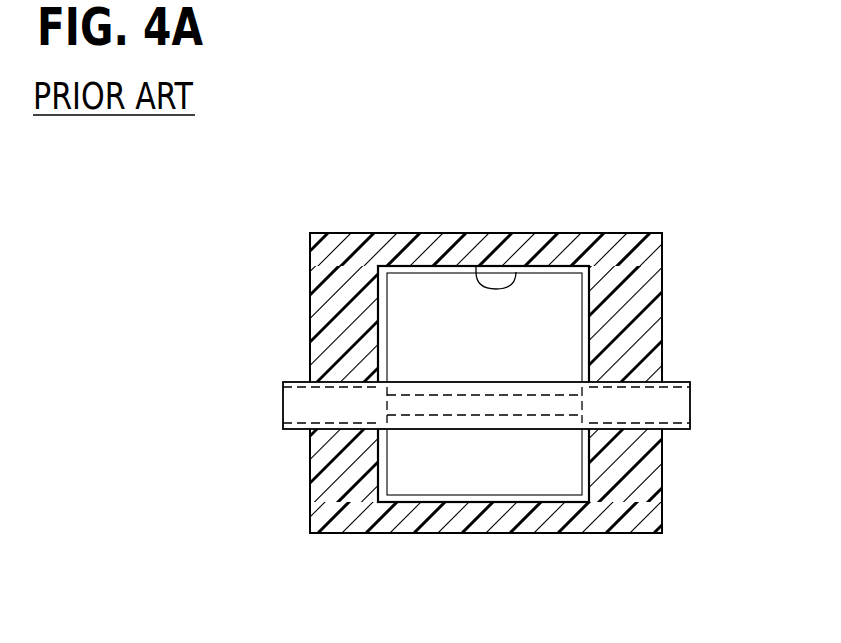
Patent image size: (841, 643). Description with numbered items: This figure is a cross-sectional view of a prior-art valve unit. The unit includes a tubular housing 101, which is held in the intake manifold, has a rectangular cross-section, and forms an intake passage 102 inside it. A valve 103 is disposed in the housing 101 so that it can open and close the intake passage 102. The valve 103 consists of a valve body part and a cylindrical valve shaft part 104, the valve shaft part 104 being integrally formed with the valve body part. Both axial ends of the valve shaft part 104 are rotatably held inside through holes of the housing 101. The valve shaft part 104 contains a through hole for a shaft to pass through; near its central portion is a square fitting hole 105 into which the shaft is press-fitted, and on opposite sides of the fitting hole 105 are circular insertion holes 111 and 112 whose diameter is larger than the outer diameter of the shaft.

The tubular housing 101 is at (343, 233).
The intake passage 102 is at (516, 272).
The valve 103 is at (568, 324).
The valve shaft part 104 is at (455, 381).
The square fitting hole 105 is at (478, 402).
The circular insertion hole 111 is at (326, 387).
The circular insertion hole 112 is at (648, 388).